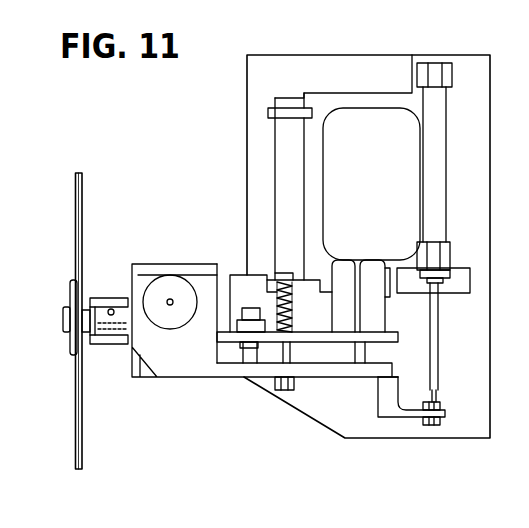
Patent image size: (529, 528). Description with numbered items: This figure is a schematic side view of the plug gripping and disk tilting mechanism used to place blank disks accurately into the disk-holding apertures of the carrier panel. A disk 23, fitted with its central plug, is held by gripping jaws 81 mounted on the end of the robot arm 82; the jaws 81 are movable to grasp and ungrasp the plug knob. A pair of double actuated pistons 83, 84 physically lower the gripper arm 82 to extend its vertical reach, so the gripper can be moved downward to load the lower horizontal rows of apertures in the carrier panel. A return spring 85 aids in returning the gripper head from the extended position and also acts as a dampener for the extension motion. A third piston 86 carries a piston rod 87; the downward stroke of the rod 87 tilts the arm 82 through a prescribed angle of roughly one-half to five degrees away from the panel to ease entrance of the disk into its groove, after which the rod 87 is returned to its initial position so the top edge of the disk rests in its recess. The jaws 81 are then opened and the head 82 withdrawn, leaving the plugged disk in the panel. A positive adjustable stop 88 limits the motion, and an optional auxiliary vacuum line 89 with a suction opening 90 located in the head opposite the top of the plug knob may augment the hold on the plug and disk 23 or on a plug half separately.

The disk 23 is at (75, 233).
The gripping jaws 81 is at (98, 296).
The robot arm 82 is at (182, 368).
The double actuated piston 83 is at (273, 181).
The double actuated piston 84 is at (435, 177).
The return spring 85 is at (275, 303).
The third piston 86 is at (378, 310).
The piston rod 87 is at (365, 350).
The positive adjustable stop 88 is at (231, 366).
The auxiliary vacuum line 89 is at (116, 305).
The suction opening 90 is at (73, 340).